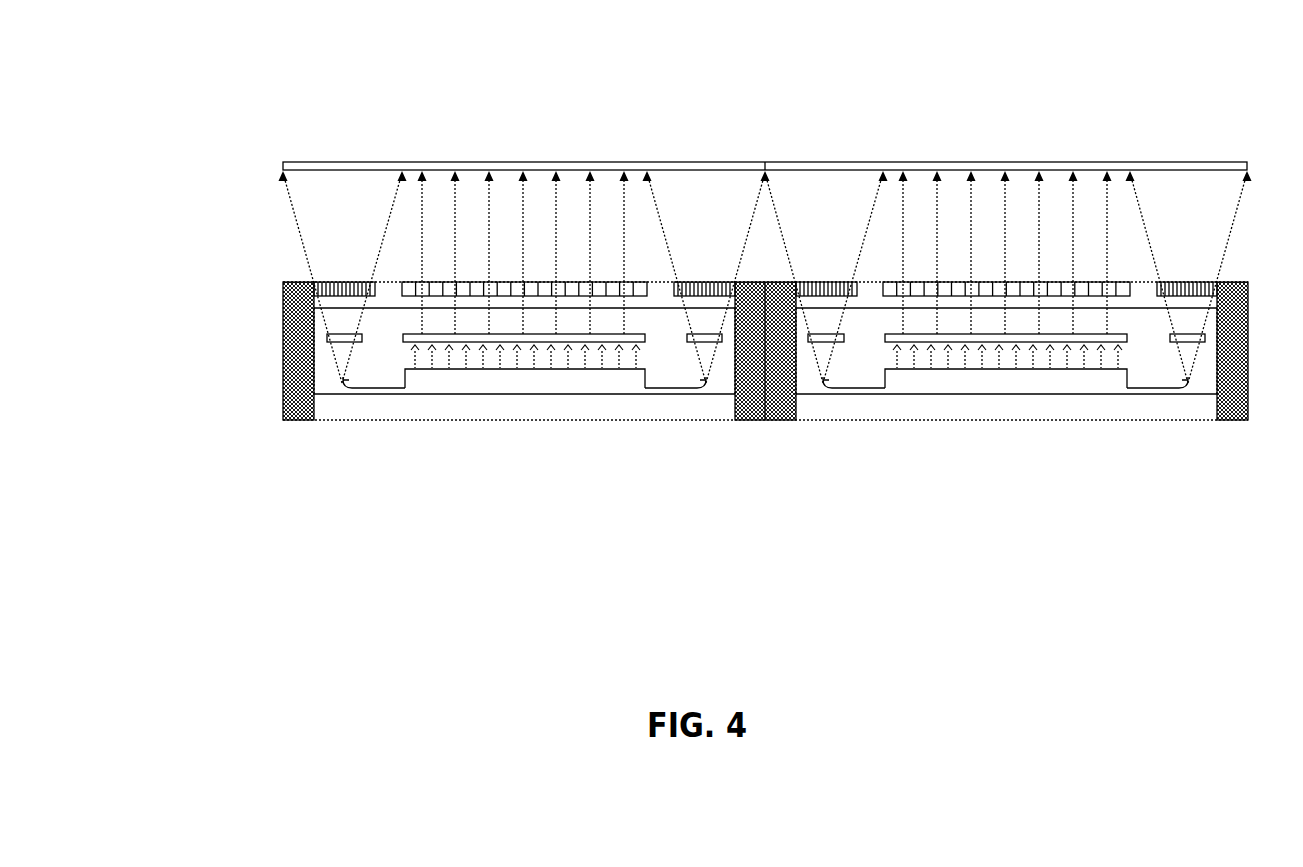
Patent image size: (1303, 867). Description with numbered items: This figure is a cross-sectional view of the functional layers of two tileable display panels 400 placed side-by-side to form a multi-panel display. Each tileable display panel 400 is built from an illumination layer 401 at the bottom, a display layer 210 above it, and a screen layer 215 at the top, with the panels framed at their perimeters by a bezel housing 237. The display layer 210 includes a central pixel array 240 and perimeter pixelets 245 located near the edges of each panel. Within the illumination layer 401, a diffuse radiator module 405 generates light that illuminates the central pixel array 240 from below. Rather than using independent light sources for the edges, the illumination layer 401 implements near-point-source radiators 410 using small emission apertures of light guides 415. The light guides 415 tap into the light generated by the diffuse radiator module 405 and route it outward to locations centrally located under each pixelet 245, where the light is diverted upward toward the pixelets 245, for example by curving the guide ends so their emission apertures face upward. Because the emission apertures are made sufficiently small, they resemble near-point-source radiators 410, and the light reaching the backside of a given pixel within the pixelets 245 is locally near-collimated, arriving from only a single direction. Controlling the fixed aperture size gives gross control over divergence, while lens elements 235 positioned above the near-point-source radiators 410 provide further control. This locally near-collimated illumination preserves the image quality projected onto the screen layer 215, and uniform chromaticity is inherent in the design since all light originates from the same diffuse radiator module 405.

The tileable display panel 400 is at (303, 91).
The screen layer 215 is at (266, 154).
The display layer 210 is at (257, 282).
The illumination layer 401 is at (257, 418).
The bezel housing 237 is at (290, 282).
The perimeter pixelets 245 is at (356, 282).
The central pixel array 240 is at (481, 275).
The lens elements 235 is at (348, 343).
The diffuse radiator module 405 is at (539, 389).
The near-point-source radiators 410 is at (343, 390).
The light guides 415 is at (377, 395).